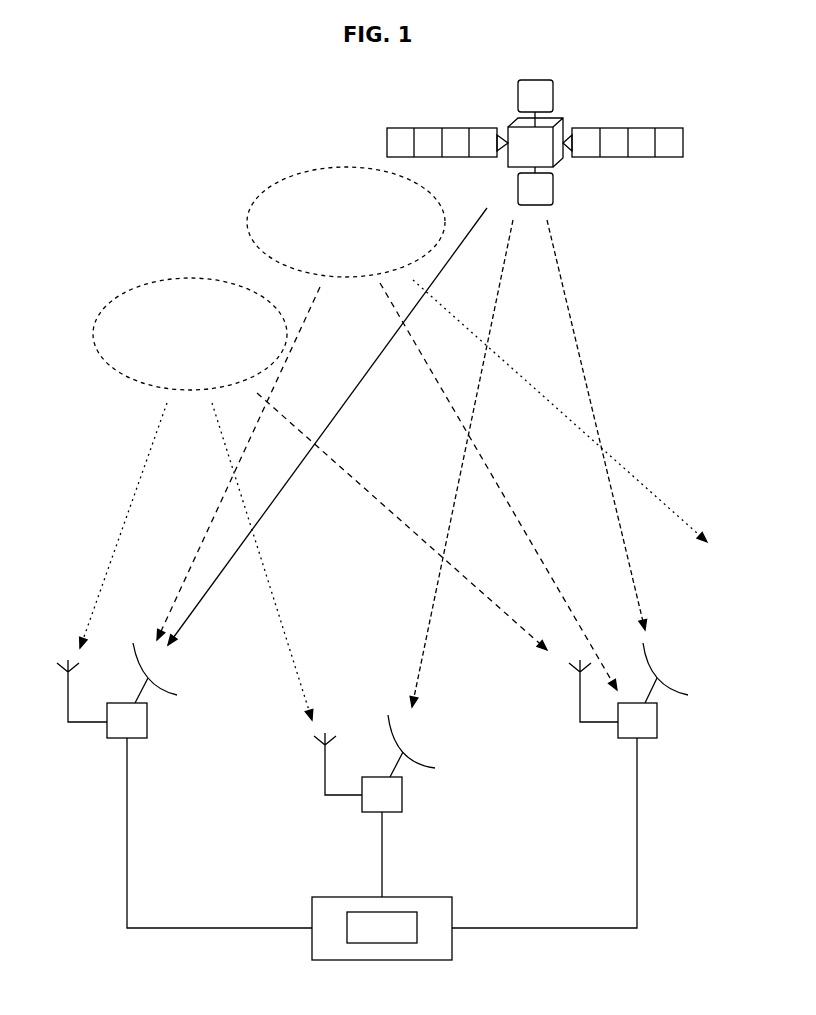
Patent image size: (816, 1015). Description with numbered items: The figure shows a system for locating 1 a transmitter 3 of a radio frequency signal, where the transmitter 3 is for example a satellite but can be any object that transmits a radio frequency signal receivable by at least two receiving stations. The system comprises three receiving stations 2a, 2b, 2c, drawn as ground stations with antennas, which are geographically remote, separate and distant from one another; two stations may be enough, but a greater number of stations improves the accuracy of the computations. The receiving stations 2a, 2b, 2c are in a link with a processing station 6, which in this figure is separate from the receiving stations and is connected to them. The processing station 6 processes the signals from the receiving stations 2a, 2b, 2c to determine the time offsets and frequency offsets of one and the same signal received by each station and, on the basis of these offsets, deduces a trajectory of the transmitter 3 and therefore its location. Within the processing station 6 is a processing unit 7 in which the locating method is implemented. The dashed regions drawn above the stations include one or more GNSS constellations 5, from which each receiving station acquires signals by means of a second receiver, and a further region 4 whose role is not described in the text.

The system for locating 1 is at (612, 372).
The receiving station 2a is at (150, 724).
The receiving station 2b is at (405, 796).
The receiving station 2c is at (660, 722).
The transmitter 3 is at (568, 177).
The coverage area 4 is at (346, 222).
The GNSS constellations 5 is at (190, 334).
The processing station 6 is at (382, 928).
The processing unit 7 is at (382, 927).